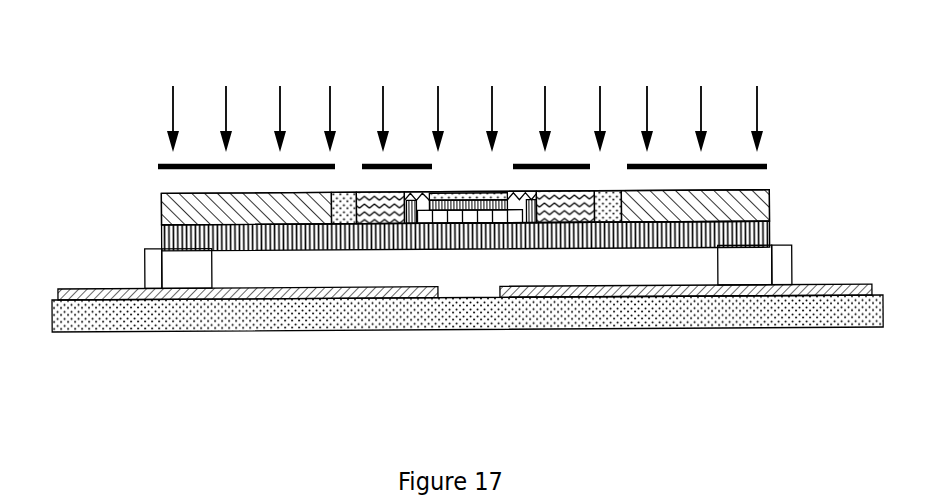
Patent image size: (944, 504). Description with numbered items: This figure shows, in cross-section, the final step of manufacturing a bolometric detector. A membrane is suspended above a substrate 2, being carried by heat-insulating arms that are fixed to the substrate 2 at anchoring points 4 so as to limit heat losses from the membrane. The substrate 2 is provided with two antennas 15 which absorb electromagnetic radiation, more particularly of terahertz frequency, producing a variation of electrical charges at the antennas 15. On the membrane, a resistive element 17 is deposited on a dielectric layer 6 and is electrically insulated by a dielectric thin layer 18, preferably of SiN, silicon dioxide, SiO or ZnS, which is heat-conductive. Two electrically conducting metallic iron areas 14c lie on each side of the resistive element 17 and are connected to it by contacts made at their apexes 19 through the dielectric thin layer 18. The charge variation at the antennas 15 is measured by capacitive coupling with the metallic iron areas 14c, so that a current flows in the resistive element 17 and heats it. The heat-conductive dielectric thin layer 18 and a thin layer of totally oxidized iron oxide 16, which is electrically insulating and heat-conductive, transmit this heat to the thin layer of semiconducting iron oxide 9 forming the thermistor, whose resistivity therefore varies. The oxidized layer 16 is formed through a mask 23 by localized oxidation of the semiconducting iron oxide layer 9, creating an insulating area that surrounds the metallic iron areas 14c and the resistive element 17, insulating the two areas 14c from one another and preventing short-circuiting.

The substrate 2 is at (846, 315).
The anchoring points 4 is at (185, 272).
The dielectric layer 6 is at (273, 250).
The thin layer of semiconducting iron oxide 9 is at (683, 207).
The metallic iron areas 14c is at (378, 197).
The antennas 15 is at (118, 294).
The thin layer of totally oxidized iron oxide 16 is at (473, 192).
The resistive element 17 is at (493, 228).
The dielectric thin layer 18 is at (557, 250).
The apexes 19 is at (428, 200).
The mask 23 is at (767, 166).